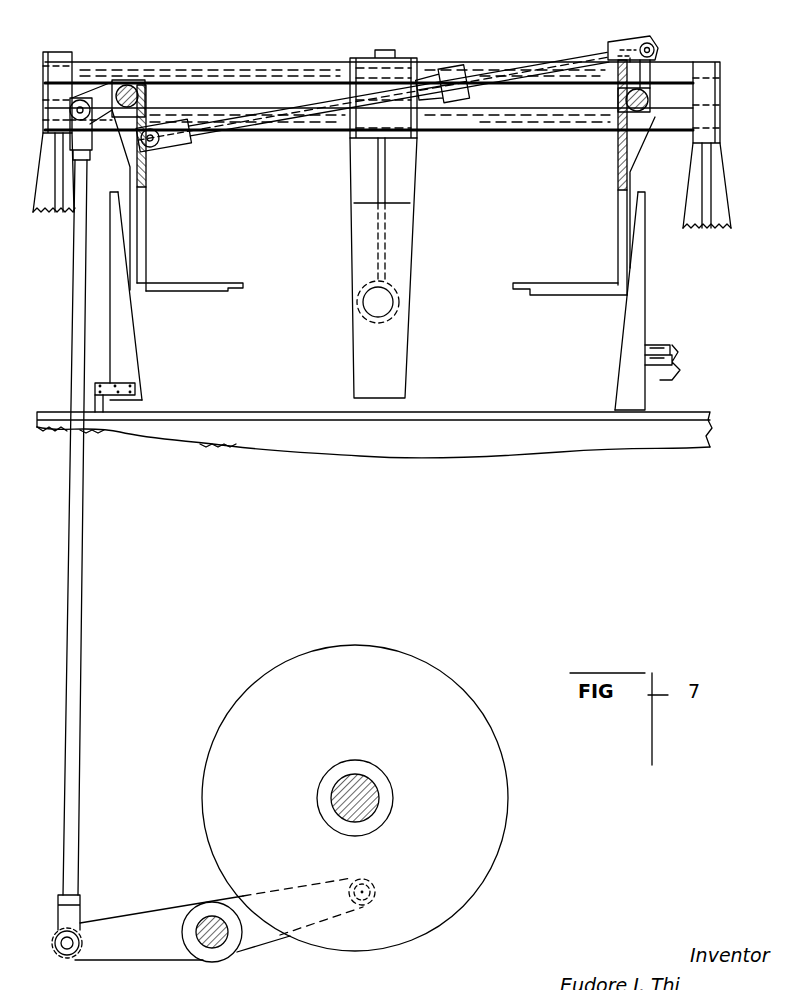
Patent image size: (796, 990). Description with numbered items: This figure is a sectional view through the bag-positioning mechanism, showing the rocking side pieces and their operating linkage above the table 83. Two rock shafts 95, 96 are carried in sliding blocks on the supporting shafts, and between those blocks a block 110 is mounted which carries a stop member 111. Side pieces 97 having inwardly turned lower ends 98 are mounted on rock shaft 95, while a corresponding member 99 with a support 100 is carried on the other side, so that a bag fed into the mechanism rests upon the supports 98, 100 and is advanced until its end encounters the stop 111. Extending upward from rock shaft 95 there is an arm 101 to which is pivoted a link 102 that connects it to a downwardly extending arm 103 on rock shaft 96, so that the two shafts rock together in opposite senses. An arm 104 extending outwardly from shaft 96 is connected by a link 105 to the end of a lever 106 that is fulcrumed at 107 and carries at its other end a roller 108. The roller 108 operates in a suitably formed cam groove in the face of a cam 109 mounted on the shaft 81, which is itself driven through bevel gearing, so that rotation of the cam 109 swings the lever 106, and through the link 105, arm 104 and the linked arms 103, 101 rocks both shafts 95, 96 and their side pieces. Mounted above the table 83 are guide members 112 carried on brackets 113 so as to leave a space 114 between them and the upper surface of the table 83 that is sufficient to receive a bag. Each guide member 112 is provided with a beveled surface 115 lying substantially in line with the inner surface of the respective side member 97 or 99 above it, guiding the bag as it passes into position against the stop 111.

The shaft 81 is at (356, 797).
The table 83 is at (355, 420).
The rock shaft 95 is at (628, 115).
The rock shaft 96 is at (140, 92).
The side piece 97 is at (620, 208).
The inwardly turned lower end 98 is at (542, 287).
The side member 99 is at (142, 207).
The support 100 is at (190, 280).
The arm 101 is at (647, 70).
The link 102 is at (337, 103).
The arm 103 is at (147, 120).
The arm 104 is at (97, 98).
The link 105 is at (77, 612).
The lever 106 is at (105, 925).
The fulcrum 107 is at (217, 923).
The roller 108 is at (377, 895).
The cam 109 is at (467, 707).
The block 110 is at (403, 172).
The stop member 111 is at (400, 327).
The guide member 112 is at (644, 328).
The bracket 113 is at (97, 390).
The space 114 is at (122, 408).
The beveled surface 115 is at (622, 342).